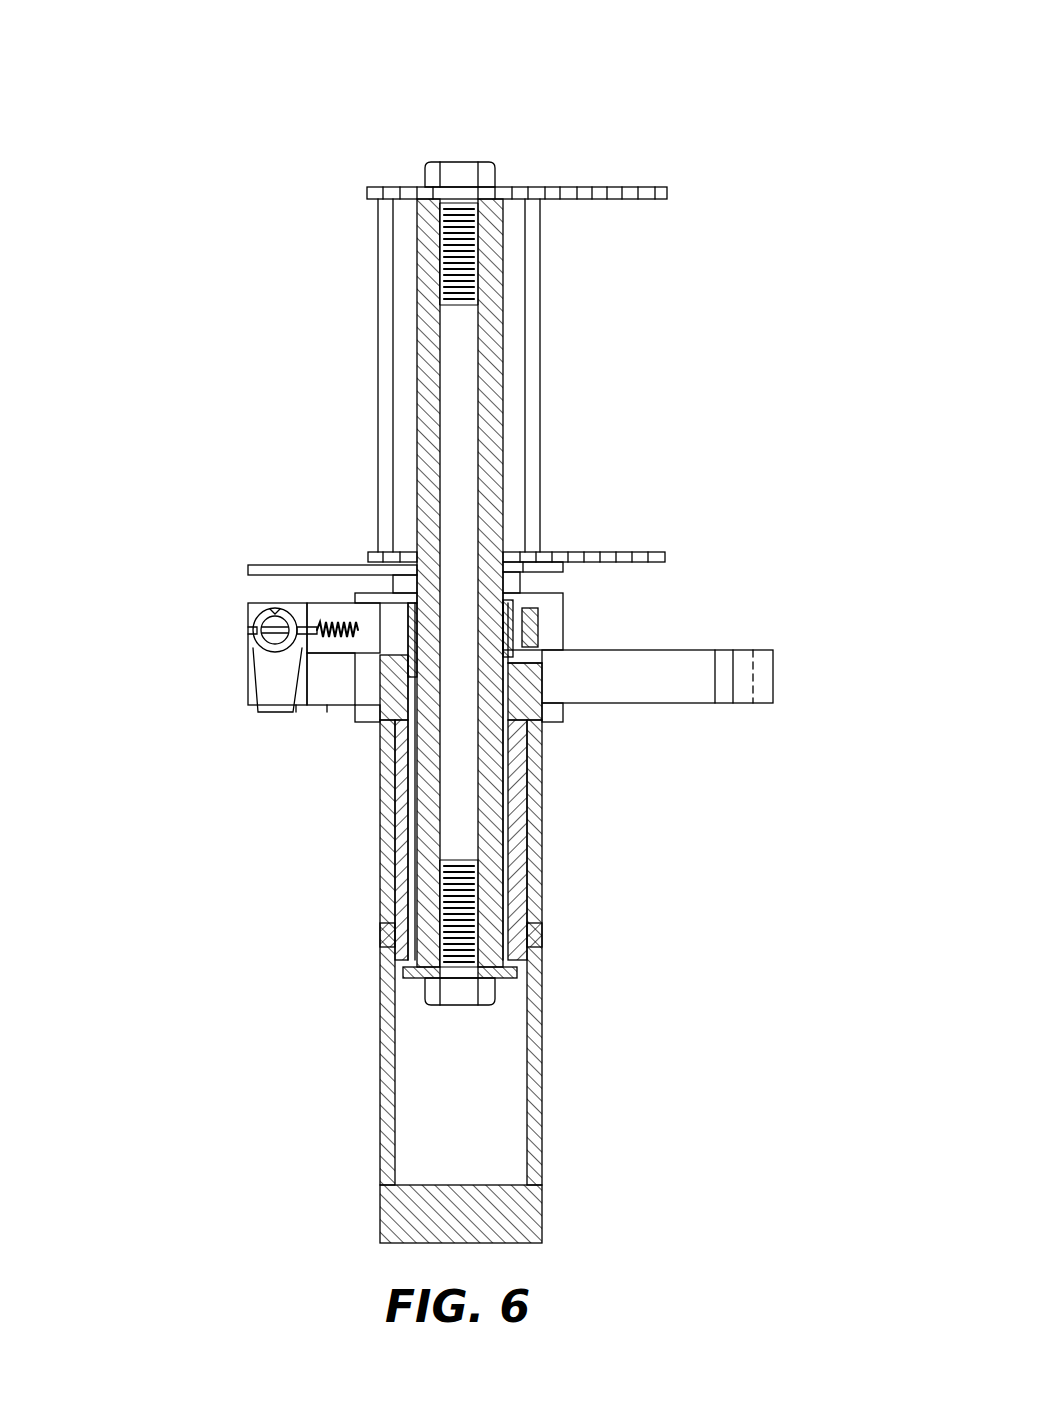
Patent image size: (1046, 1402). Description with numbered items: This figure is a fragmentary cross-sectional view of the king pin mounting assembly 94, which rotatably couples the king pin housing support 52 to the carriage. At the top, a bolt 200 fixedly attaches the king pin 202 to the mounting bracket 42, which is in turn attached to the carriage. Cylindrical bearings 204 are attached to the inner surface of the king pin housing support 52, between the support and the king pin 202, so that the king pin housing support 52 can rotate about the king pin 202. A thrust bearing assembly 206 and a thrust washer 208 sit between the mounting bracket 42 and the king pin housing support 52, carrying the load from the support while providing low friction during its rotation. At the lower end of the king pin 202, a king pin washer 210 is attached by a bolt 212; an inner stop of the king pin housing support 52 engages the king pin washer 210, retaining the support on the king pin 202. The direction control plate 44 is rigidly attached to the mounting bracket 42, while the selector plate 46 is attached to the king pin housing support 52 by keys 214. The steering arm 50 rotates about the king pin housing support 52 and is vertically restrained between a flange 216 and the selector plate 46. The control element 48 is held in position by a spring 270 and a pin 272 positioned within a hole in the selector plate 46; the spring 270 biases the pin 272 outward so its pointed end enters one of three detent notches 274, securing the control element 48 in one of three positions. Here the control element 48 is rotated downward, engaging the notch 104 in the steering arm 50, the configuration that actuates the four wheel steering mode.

The king pin mounting assembly 94 is at (742, 100).
The bolt 200 is at (430, 180).
The king pin 202 is at (428, 228).
The mounting bracket 42 is at (665, 192).
The direction control plate 44 is at (257, 568).
The selector plate 46 is at (325, 607).
The control element 48 is at (273, 703).
The steering arm 50 is at (327, 705).
The king pin housing support 52 is at (385, 770).
The notch 104 is at (298, 705).
The cylindrical bearings 204 is at (540, 650).
The thrust bearing assembly 206 is at (520, 583).
The thrust washer 208 is at (557, 595).
The king pin washer 210 is at (512, 973).
The bolt 212 is at (487, 993).
The keys 214 is at (387, 613).
The flange 216 is at (553, 713).
The spring 270 is at (332, 636).
The pin 272 is at (303, 632).
The detent notches 274 is at (257, 632).